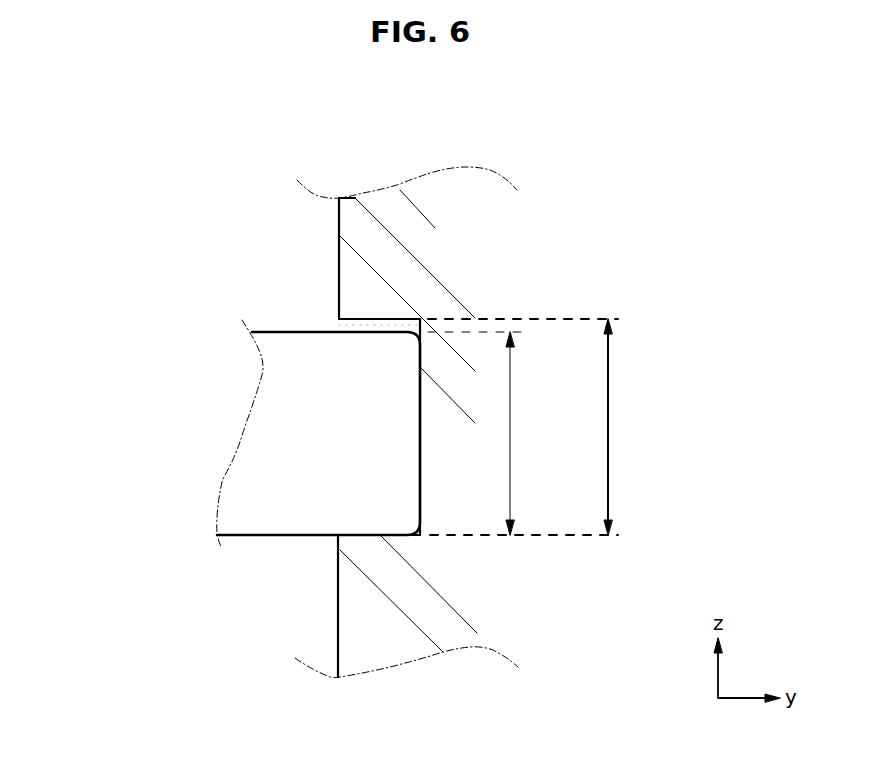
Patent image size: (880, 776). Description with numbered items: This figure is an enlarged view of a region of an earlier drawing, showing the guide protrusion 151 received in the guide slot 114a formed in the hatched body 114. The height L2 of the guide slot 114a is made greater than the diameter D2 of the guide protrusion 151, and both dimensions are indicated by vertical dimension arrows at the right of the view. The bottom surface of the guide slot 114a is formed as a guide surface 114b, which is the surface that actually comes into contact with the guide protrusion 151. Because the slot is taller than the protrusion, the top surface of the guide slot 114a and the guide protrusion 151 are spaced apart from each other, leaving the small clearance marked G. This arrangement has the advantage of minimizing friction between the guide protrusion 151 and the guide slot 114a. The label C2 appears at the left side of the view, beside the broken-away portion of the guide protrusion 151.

The housing body 114 is at (390, 213).
The guide slot 114a is at (380, 317).
The guide surface 114b is at (353, 537).
The gap G is at (338, 330).
The guide protrusion 151 is at (250, 500).
The second chamber C2 is at (67, 428).
The diameter of the guide protrusion D2 is at (511, 463).
The height of the guide slot L2 is at (609, 383).